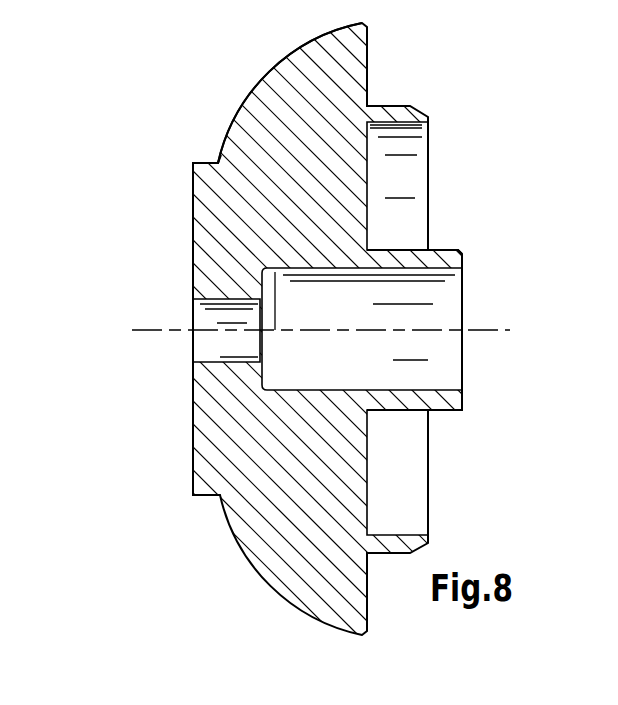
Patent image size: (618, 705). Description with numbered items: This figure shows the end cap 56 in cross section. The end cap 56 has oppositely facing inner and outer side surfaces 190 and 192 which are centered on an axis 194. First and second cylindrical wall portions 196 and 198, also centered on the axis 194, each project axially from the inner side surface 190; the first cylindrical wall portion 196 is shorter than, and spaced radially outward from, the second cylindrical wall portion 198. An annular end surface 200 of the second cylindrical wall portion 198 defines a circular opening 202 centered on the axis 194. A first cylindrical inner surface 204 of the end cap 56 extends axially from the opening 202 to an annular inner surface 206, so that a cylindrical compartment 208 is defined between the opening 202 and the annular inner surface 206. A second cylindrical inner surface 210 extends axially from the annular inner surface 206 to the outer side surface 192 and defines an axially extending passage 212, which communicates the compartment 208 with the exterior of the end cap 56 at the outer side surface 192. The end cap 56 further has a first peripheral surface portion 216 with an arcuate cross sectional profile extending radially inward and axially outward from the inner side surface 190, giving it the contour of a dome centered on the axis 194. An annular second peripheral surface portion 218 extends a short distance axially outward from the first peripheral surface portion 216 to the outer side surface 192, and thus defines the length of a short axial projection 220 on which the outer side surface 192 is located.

The end cap 56 is at (132, 108).
The inner side surface 190 is at (368, 58).
The outer side surface 192 is at (193, 222).
The axis 194 is at (150, 330).
The first cylindrical wall portion 196 is at (390, 107).
The second cylindrical wall portion 198 is at (445, 260).
The annular end surface 200 is at (463, 260).
The circular opening 202 is at (472, 300).
The first cylindrical inner surface 204 is at (437, 390).
The annular inner surface 206 is at (263, 380).
The cylindrical compartment 208 is at (358, 315).
The second cylindrical inner surface 210 is at (213, 356).
The passage 212 is at (193, 312).
The first peripheral surface portion 216 is at (253, 90).
The second peripheral surface portion 218 is at (208, 163).
The short axial projection 220 is at (203, 180).